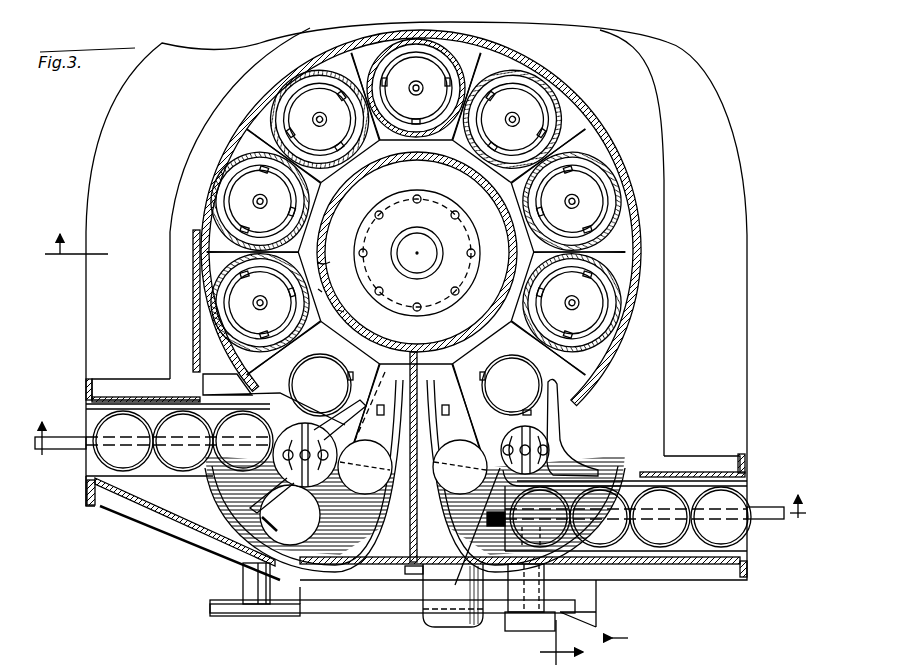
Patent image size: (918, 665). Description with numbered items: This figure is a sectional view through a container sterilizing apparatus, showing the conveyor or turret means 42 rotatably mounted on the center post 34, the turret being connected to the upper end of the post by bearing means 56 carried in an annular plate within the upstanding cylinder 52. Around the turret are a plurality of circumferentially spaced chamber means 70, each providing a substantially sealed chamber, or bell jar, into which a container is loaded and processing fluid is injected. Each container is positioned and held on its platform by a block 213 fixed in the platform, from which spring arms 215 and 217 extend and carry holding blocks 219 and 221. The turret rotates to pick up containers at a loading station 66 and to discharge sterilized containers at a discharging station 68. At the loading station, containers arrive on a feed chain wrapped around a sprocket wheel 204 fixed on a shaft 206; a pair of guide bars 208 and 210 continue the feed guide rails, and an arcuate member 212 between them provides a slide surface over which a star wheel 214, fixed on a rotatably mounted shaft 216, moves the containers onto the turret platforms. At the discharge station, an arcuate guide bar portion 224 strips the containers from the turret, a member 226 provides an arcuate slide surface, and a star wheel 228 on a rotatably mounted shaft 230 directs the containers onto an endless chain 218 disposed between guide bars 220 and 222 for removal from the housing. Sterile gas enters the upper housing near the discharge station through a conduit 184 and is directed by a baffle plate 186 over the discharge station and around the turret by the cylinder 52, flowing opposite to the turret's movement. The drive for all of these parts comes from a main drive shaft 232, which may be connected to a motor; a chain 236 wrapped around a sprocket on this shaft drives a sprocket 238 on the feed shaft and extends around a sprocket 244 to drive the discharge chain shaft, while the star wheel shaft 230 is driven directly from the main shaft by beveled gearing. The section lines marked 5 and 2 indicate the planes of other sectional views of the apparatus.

The chamber means 70 is at (370, 61).
The conveyor or turret means 42 is at (620, 341).
The bearing means 56 is at (406, 196).
The block 219 is at (417, 252).
The spring arm 215 is at (345, 262).
The block 213 is at (319, 289).
The spring arm 217 is at (340, 311).
The center post 34 is at (424, 274).
The cylinder 52 is at (508, 233).
The block 221 is at (196, 358).
The guide bar 210 is at (321, 385).
The shaft 216 is at (324, 412).
The arcuate guide bar portion 224 is at (446, 407).
The star wheel 214 is at (324, 496).
The baffle plate 186 is at (407, 515).
The member 226 is at (460, 512).
The star wheel 228 is at (560, 418).
The shaft 230 is at (548, 447).
The guide bar 222 is at (672, 481).
The endless chain 218 is at (634, 556).
The guide bar 220 is at (704, 553).
The sprocket wheel 204 is at (262, 503).
The shaft 206 is at (262, 510).
The loading station 66 is at (285, 540).
The guide bar 208 is at (267, 550).
The sprocket 238 is at (230, 612).
The arcuate member 212 is at (300, 587).
The conduit 184 is at (432, 618).
The discharging station 68 is at (453, 595).
The main drive shaft 232 is at (516, 637).
The chain 236 is at (340, 610).
The sprocket 244 is at (665, 646).
The section line 5 is at (314, 449).
The section line 2 is at (421, 488).